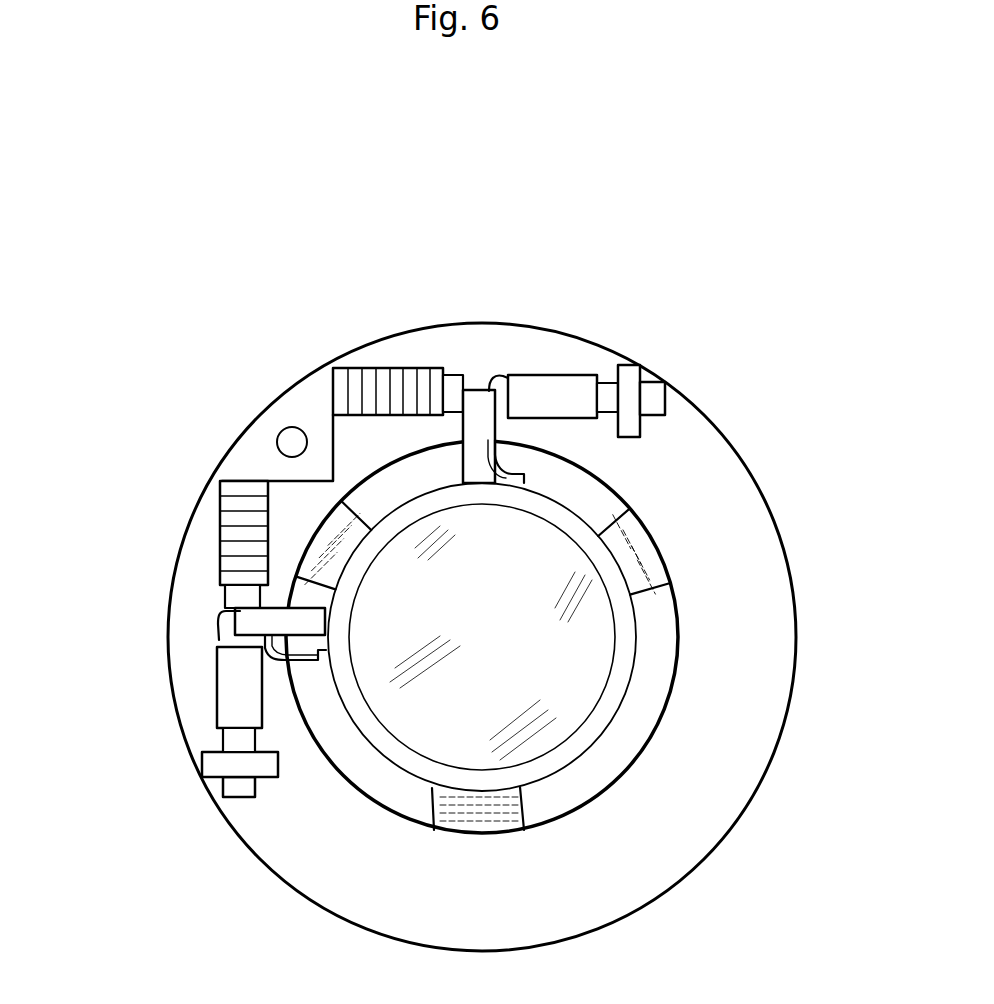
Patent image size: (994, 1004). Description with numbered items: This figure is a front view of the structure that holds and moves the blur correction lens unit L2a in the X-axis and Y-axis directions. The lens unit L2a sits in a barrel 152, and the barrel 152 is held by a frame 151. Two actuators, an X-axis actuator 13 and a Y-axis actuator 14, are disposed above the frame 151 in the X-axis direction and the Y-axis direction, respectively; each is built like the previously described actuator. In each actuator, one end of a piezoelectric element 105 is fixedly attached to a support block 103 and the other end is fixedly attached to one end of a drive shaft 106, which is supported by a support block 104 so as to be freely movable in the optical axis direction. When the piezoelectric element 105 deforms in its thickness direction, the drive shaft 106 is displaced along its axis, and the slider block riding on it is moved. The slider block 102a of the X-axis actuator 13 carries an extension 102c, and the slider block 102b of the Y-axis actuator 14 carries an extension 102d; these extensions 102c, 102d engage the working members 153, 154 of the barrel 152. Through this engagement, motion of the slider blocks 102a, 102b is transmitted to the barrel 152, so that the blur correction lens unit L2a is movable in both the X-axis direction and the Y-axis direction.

The X-axis actuator 13 is at (530, 350).
The Y-axis actuator 14 is at (193, 661).
The slider block 102a is at (572, 382).
The slider block 102b is at (228, 703).
The extension 102c is at (500, 376).
The extension 102d is at (220, 630).
The support block 103 is at (230, 470).
The support block 104 is at (641, 437).
The piezoelectric element 105 is at (374, 372).
The drive shaft 106 is at (653, 402).
The frame 151 is at (612, 893).
The barrel 152 is at (622, 668).
The working member 153 is at (470, 396).
The working member 154 is at (240, 610).
The blur correction lens unit L2a is at (548, 738).